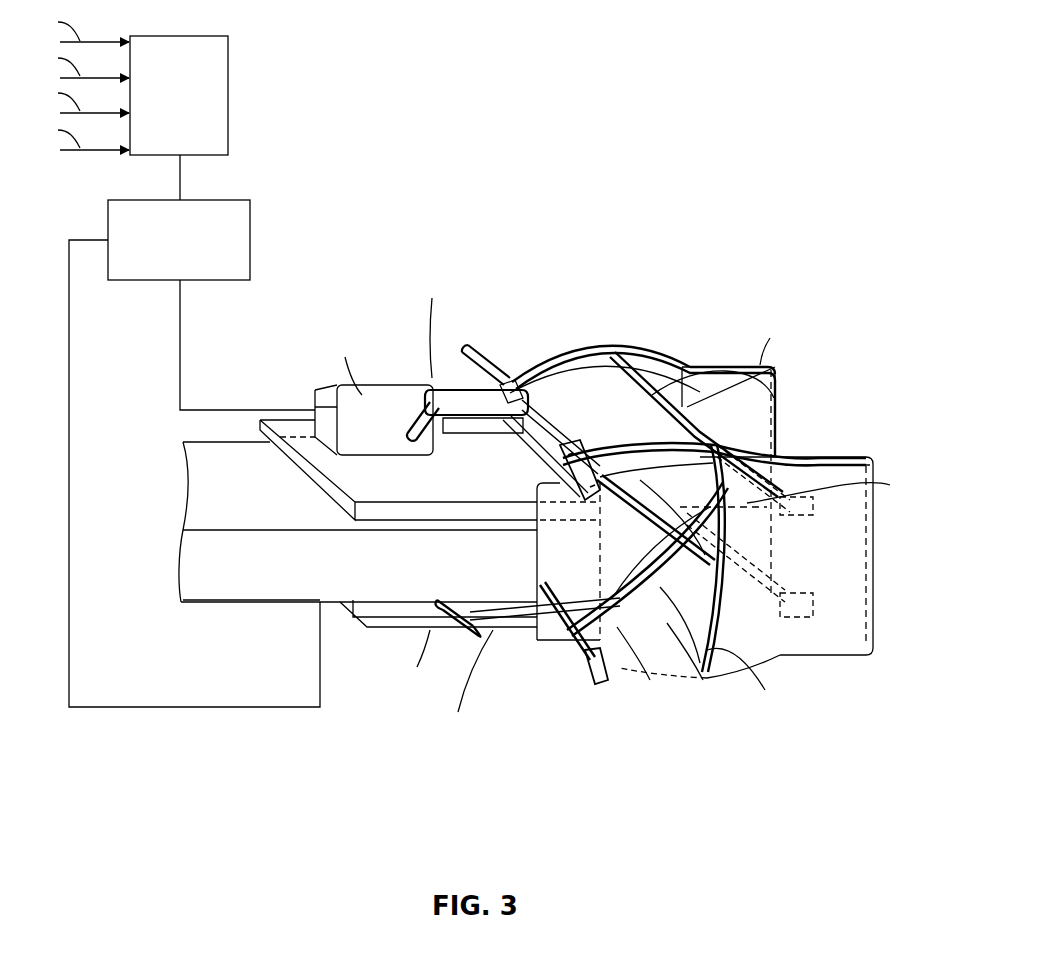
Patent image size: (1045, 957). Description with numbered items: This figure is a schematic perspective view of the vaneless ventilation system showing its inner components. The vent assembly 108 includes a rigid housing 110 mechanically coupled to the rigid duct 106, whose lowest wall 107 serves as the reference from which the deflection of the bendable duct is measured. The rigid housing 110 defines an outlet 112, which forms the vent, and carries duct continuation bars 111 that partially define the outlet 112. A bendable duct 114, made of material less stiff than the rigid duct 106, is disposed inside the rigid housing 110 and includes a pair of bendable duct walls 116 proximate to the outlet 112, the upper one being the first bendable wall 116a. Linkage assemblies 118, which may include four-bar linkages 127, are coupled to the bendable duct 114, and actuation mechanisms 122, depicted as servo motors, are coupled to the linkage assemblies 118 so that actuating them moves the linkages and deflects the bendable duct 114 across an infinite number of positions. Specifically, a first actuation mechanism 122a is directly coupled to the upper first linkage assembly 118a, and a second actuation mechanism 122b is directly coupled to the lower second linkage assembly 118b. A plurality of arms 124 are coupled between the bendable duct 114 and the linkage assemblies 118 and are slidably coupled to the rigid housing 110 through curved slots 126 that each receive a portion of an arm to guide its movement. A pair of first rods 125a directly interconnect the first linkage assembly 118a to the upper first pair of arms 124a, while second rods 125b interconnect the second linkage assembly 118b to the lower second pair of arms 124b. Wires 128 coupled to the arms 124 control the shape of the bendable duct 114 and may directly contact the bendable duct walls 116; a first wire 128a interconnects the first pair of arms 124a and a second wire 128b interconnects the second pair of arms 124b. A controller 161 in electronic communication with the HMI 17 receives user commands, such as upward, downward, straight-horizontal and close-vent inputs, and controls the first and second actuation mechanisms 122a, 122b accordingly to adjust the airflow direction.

The HMI 17 is at (228, 97).
The controller 161 is at (205, 198).
The rigid duct 106 is at (202, 585).
The lowest wall 107 is at (258, 603).
The vent assembly 108 is at (612, 290).
The rigid housing 110 is at (880, 506).
The duct continuation bars 111 is at (797, 490).
The outlet 112 is at (790, 420).
The bendable duct 114 is at (551, 358).
The bendable duct walls 116 is at (583, 366).
The first bendable wall 116a is at (643, 393).
The linkage assemblies 118 is at (423, 383).
The first linkage assembly 118a is at (423, 325).
The second linkage assembly 118b is at (460, 688).
The actuation mechanisms 122 is at (337, 388).
The first actuation mechanism 122a is at (348, 362).
The second actuation mechanism 122b is at (415, 664).
The arms 124 is at (467, 355).
The first pair of arms 124a is at (520, 365).
The second pair of arms 124b is at (590, 678).
The first rods 125a is at (513, 440).
The second rods 125b is at (525, 622).
The curved slots 126 is at (783, 418).
The four-bar linkages 127 is at (463, 432).
The wires 128 is at (703, 398).
The first wire 128a is at (773, 339).
The second wire 128b is at (850, 489).